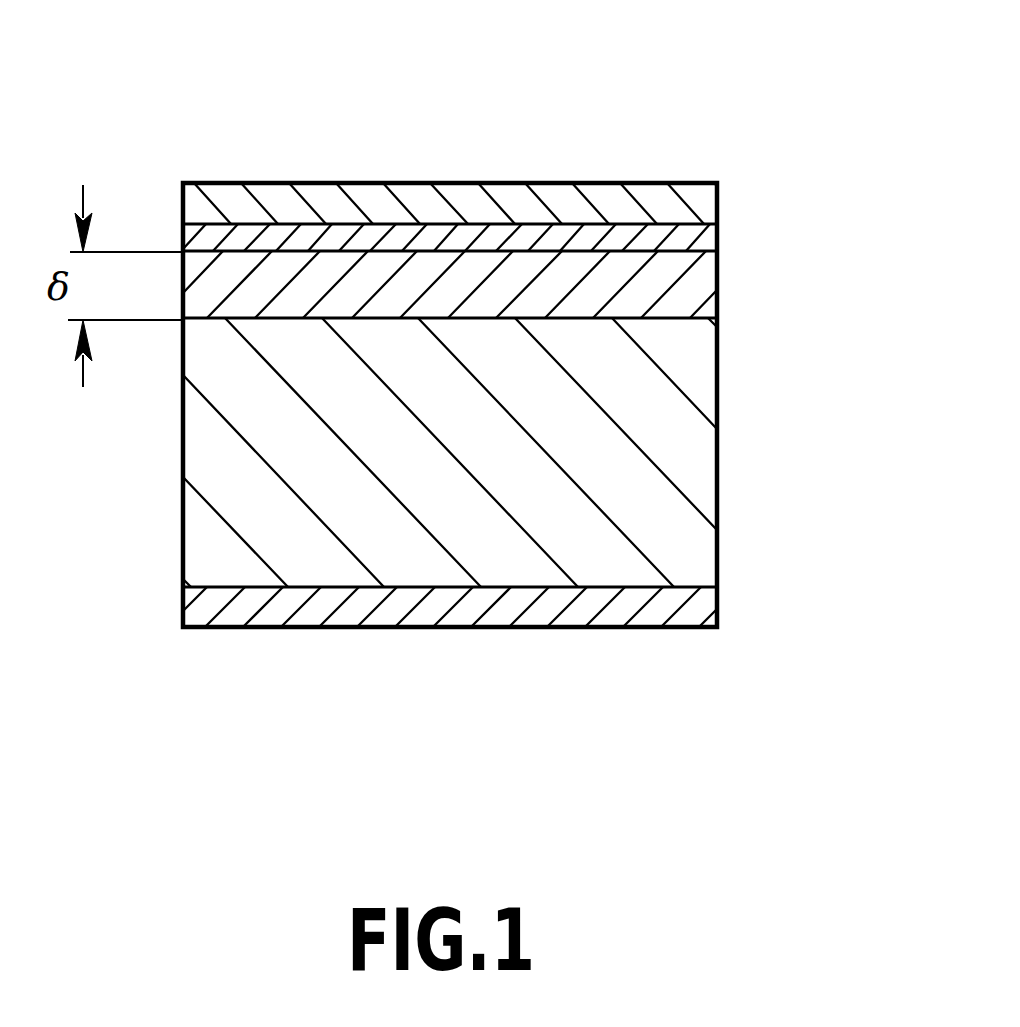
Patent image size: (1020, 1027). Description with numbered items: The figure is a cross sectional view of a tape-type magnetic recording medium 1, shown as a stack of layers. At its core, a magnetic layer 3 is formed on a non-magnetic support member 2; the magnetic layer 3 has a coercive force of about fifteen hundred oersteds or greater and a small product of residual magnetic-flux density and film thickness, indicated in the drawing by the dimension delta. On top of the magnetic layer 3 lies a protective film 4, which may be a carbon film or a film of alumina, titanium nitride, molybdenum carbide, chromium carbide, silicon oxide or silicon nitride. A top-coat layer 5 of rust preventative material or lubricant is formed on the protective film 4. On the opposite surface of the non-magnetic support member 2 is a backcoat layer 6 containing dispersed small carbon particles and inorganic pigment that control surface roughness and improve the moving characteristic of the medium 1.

The tape-type magnetic recording medium 1 is at (772, 125).
The non-magnetic support member 2 is at (672, 445).
The magnetic layer 3 is at (697, 295).
The protective film 4 is at (697, 234).
The top-coat layer 5 is at (567, 207).
The backcoat layer 6 is at (693, 607).